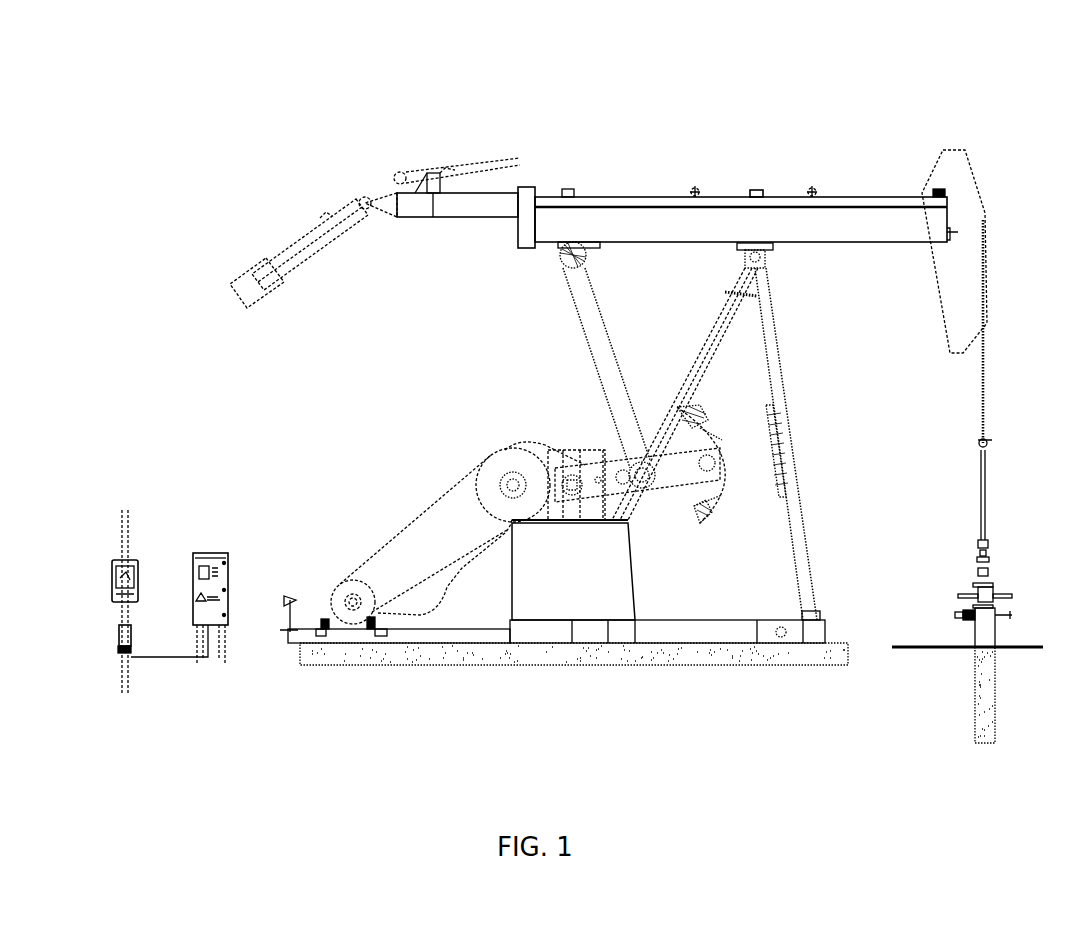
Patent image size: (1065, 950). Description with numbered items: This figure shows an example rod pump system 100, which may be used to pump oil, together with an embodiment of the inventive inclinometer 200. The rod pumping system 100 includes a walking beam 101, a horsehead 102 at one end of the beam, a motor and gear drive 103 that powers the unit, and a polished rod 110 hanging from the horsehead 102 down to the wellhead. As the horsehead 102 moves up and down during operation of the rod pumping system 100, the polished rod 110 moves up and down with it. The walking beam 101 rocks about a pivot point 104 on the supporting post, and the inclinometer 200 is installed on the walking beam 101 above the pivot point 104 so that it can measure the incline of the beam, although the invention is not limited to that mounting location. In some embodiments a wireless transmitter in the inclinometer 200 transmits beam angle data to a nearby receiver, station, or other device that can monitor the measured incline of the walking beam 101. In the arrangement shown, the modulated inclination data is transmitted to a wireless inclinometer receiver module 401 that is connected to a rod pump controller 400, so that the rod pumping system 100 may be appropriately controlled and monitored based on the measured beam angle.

The rod pump system 100 is at (158, 60).
The walking beam 101 is at (655, 198).
The inclinometer 200 is at (760, 190).
The horsehead 102 is at (975, 214).
The pivot point 104 is at (782, 262).
The motor and gear drive 103 is at (502, 418).
The polished rod 110 is at (985, 484).
The rod pump controller 400 is at (178, 506).
The wireless inclinometer receiver module 401 is at (118, 634).